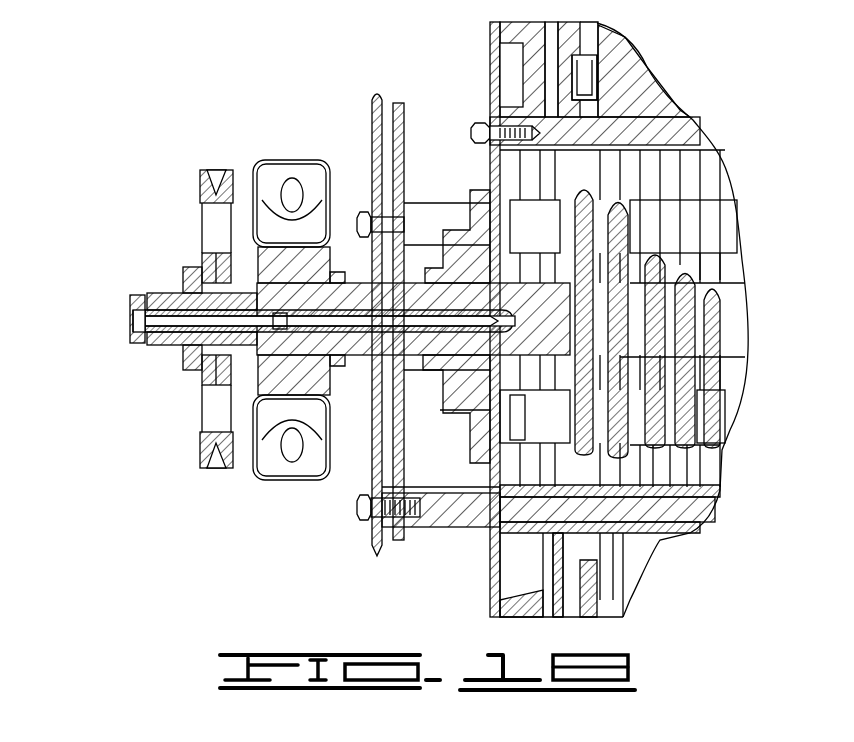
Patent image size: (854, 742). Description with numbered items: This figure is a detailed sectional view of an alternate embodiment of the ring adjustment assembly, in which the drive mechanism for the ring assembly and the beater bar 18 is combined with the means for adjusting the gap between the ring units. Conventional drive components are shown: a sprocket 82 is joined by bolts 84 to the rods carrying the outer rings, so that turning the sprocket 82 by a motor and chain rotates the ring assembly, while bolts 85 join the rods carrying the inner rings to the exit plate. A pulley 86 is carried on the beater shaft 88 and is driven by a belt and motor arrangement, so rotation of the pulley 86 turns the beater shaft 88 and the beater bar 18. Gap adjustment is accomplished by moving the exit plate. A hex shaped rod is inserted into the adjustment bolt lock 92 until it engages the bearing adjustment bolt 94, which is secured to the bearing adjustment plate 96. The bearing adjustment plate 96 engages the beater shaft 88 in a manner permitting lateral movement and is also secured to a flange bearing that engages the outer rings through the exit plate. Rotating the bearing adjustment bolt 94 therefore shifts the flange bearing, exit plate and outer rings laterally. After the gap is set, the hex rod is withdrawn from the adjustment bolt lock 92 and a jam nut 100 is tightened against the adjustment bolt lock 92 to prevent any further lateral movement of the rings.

The beater bar 18 is at (742, 292).
The sprocket 82 is at (373, 552).
The bolts 84 is at (364, 214).
The bolts 85 is at (474, 125).
The pulley 86 is at (205, 455).
The beater shaft 88 is at (205, 275).
The adjustment bolt lock 92 is at (133, 298).
The bearing adjustment bolt 94 is at (255, 348).
The bearing adjustment plate 96 is at (473, 268).
The jam nut 100 is at (165, 343).